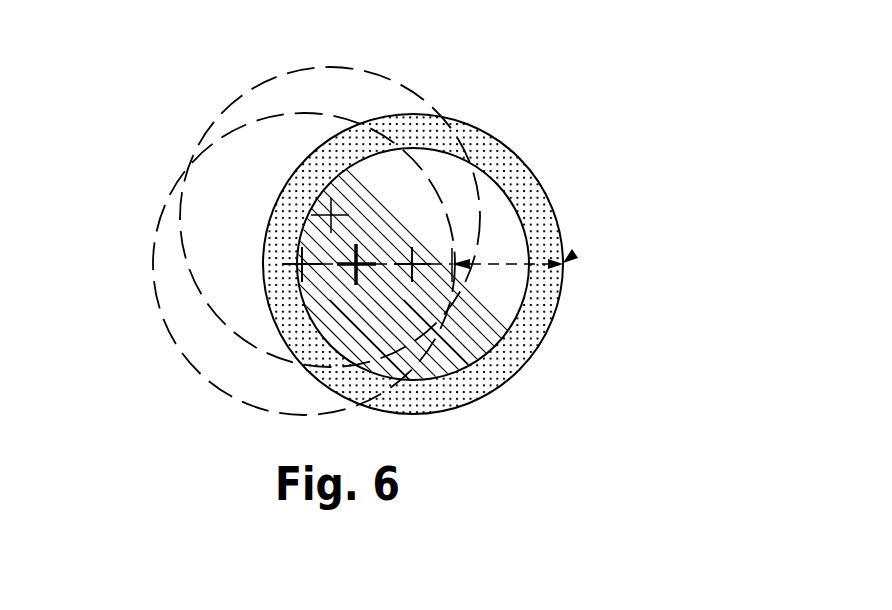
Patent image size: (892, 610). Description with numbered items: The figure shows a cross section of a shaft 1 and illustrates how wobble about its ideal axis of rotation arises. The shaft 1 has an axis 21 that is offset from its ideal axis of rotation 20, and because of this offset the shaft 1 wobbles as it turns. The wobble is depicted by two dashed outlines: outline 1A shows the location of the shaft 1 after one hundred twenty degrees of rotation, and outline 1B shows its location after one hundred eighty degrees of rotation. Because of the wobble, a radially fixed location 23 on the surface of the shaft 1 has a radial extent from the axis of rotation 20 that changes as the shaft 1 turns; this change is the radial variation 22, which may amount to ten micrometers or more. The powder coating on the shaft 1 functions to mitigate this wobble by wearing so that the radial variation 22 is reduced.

The shaft 1 is at (479, 227).
The outline of shaft after 120 degrees of rotation 1A is at (403, 88).
The outline of shaft after 180 degrees of rotation 1B is at (152, 260).
The ideal axis of rotation 20 is at (360, 262).
The axis of shaft 21 is at (413, 262).
The radial variation 22 is at (470, 264).
The radially fixed location 23 is at (566, 261).